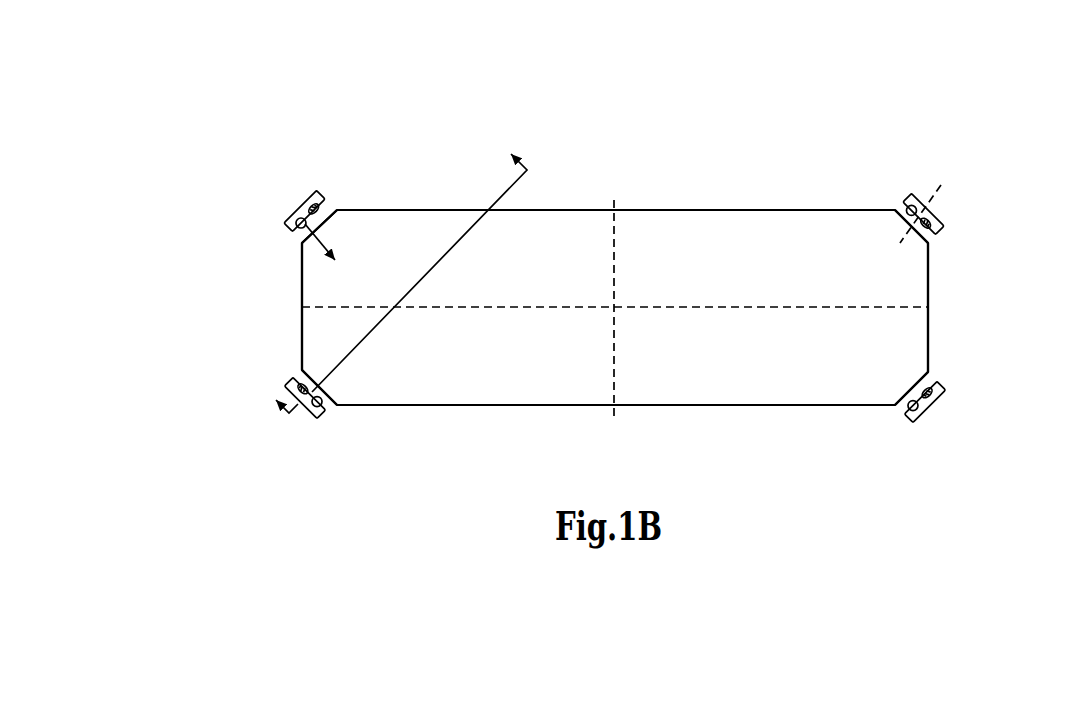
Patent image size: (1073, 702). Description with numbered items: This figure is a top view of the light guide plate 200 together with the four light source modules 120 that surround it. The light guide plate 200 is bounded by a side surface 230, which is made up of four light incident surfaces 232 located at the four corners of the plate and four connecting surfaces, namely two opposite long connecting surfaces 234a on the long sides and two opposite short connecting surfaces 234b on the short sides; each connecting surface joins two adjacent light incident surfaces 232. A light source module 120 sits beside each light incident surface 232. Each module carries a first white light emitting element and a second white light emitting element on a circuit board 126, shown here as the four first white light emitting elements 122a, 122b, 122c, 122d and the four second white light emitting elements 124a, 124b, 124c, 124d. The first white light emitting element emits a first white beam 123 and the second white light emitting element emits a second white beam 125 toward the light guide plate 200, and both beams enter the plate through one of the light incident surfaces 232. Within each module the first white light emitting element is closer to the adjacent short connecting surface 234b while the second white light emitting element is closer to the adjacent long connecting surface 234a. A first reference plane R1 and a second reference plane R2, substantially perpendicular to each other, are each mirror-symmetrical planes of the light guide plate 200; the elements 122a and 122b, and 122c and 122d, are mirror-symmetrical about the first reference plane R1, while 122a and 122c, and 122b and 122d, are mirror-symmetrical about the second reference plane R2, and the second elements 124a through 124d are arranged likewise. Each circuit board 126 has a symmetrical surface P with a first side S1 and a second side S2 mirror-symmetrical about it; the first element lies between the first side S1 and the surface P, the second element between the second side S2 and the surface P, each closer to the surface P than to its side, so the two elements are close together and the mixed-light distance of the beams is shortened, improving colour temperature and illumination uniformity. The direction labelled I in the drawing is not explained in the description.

The light source module 120 is at (375, 116).
The first white light emitting element 122a is at (288, 226).
The first white light emitting element 122b is at (929, 236).
The first white light emitting element 122c is at (294, 384).
The first white light emitting element 122d is at (938, 384).
The second white light emitting element 124a is at (319, 212).
The second white light emitting element 124b is at (911, 212).
The second white light emitting element 124c is at (319, 410).
The second white light emitting element 124d is at (920, 412).
The circuit board 126 is at (306, 219).
The first white beam 123 is at (317, 242).
The second white beam 125 is at (352, 244).
The light guide plate 200 is at (806, 387).
The side surface 230 is at (516, 410).
The light incident surface 232 is at (299, 371).
The long connecting surface 234a is at (779, 207).
The short connecting surface 234b is at (297, 288).
The first reference plane R1 is at (617, 232).
The second reference plane R2 is at (438, 310).
The first side S1 is at (944, 231).
The second side S2 is at (909, 197).
The symmetrical surface P is at (927, 210).
The light beam direction I is at (394, 274).